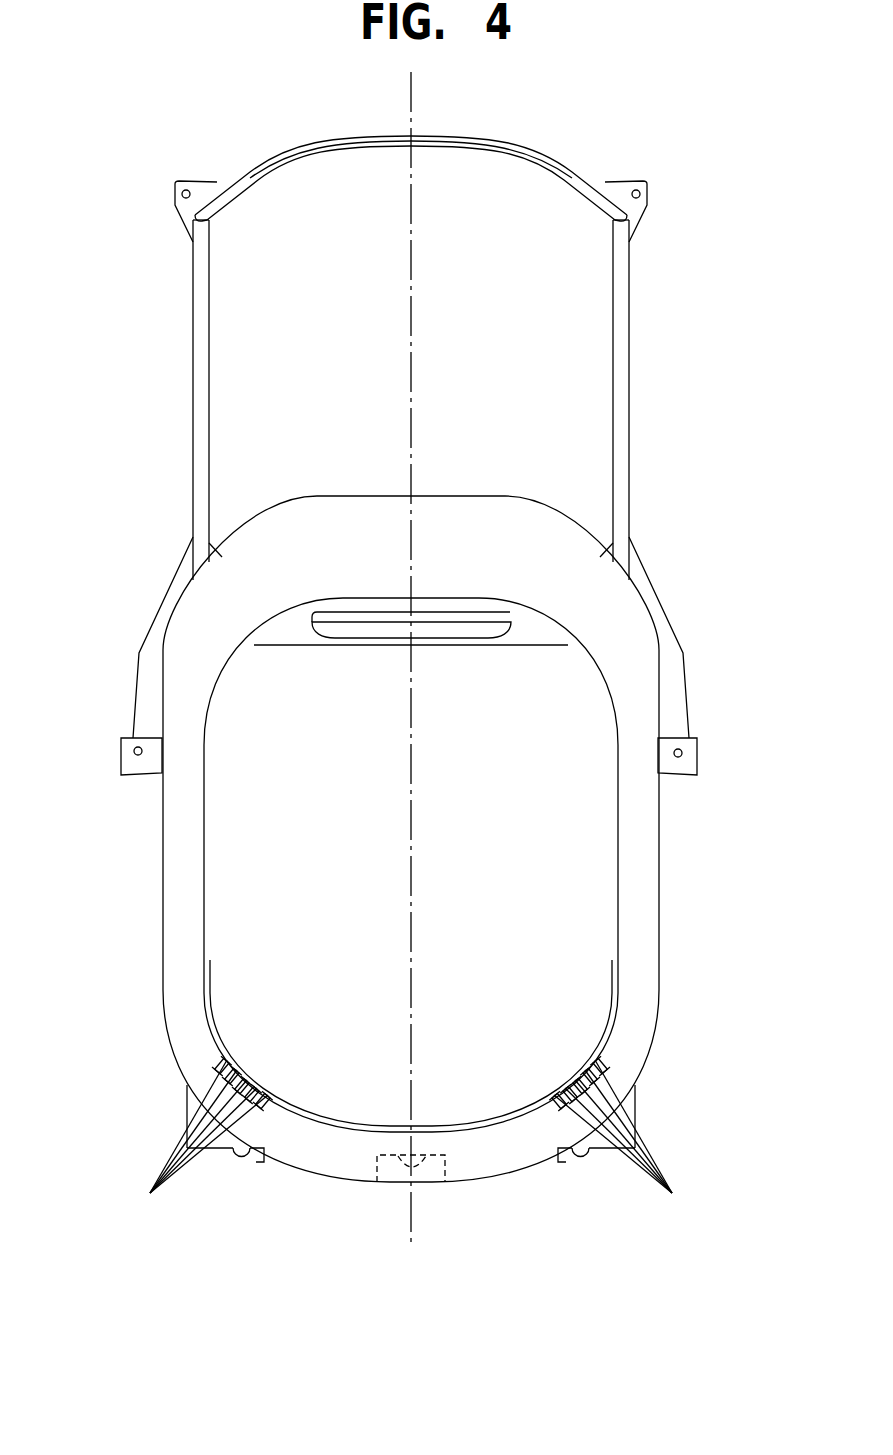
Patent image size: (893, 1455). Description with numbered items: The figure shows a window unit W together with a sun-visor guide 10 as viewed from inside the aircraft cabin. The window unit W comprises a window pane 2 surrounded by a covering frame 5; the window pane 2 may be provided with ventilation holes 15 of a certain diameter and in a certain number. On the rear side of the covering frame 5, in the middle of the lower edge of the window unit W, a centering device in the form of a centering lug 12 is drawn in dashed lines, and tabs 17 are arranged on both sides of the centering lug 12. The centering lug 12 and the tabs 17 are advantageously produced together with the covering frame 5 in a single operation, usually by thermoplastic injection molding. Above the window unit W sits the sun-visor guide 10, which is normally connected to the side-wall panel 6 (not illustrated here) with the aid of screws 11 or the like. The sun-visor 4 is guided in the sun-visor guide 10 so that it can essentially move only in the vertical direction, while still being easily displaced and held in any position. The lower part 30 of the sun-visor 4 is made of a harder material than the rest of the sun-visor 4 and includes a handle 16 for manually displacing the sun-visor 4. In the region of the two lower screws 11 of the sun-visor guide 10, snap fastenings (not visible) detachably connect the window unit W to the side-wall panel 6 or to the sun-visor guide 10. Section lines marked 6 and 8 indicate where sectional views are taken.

The window pane 2 is at (578, 1003).
The sun-visor 4 is at (570, 428).
The covering frame 5 is at (636, 891).
The side-wall panel 6 is at (400, 86).
The section line 8 is at (290, 753).
The sun-visor guide 10 is at (640, 337).
The screws 11 is at (182, 194).
The centering lug 12 is at (418, 1168).
The ventilation holes 15 is at (150, 1193).
The handle 16 is at (508, 630).
The tabs 17 is at (250, 1166).
The lower part 30 is at (600, 548).
The window unit W is at (672, 949).